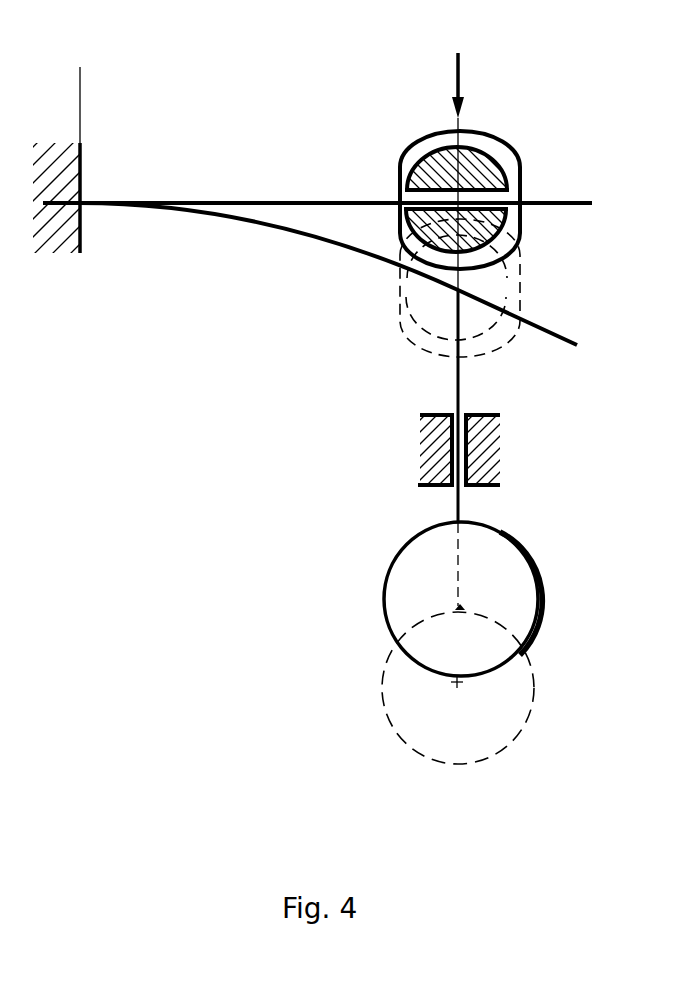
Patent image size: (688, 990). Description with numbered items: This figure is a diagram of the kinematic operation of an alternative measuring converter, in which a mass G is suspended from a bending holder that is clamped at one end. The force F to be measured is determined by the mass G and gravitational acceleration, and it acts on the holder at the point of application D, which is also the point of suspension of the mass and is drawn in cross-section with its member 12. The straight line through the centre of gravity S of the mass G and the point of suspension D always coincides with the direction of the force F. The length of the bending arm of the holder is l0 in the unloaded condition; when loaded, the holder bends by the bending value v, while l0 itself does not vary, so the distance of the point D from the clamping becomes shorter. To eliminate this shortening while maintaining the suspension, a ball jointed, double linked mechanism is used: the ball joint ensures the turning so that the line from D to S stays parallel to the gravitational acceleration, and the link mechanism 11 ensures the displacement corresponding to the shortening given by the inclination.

The link mechanism 11 is at (488, 449).
The cross-section member 12 is at (498, 183).
The point of application D is at (462, 184).
The centre of gravity S is at (462, 610).
The mass G is at (510, 626).
The force F is at (487, 62).
The bending value v is at (463, 285).
The length of the bending arm l0 is at (458, 74).